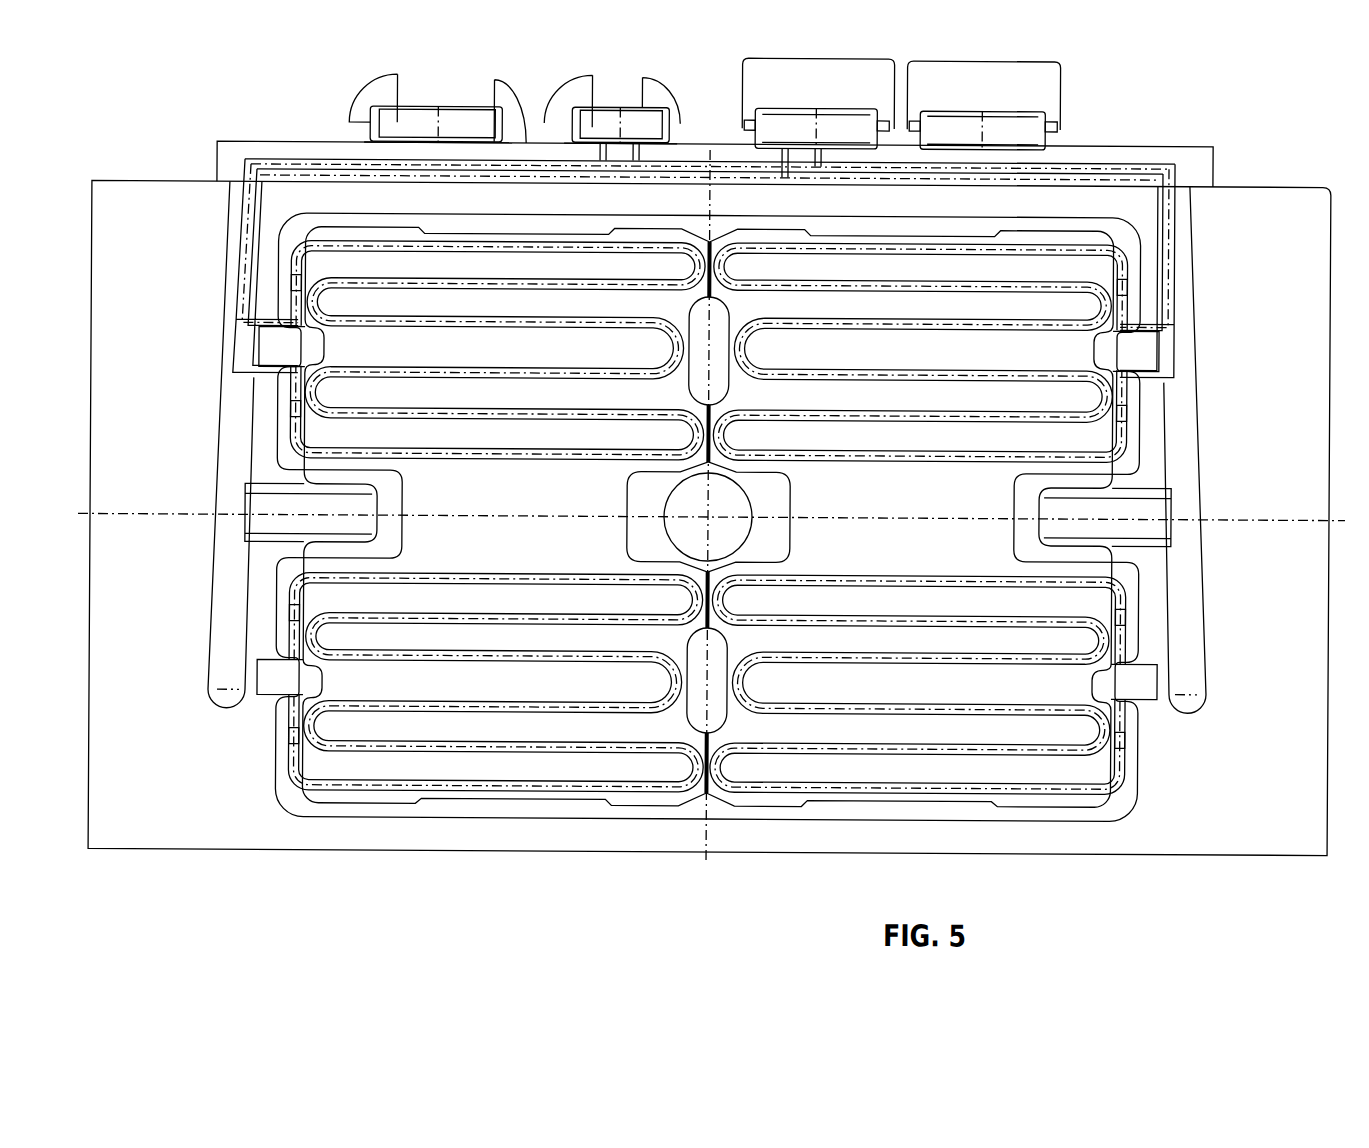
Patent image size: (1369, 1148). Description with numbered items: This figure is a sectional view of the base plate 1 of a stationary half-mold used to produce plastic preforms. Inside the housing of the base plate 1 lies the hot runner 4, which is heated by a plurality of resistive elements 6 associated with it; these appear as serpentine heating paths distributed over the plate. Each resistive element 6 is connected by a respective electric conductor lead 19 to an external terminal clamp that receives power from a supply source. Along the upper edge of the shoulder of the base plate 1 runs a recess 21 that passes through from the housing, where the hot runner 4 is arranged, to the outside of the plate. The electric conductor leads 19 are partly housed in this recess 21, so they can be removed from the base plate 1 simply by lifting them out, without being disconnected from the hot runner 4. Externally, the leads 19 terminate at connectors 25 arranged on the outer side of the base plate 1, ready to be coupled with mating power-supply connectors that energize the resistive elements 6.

The base plate 1 is at (1281, 189).
The hot runner 4 is at (986, 490).
The resistive element 6 is at (1036, 248).
The electric conductor lead 19 is at (238, 243).
The recess 21 is at (229, 459).
The connector 25 is at (420, 120).